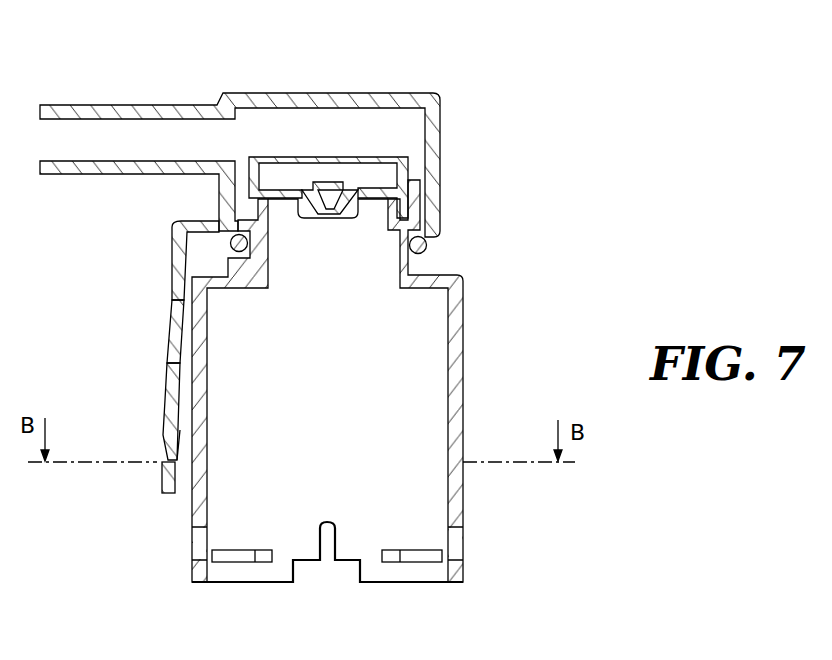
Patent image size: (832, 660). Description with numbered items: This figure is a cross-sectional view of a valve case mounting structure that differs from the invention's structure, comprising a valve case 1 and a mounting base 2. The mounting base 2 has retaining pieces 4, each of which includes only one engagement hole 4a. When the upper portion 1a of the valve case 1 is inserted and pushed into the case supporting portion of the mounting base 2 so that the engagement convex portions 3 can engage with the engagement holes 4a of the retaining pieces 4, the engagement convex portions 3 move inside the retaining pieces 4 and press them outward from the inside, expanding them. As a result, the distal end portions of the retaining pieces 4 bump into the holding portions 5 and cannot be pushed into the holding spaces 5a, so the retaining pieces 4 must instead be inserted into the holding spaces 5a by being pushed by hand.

The valve case 1 is at (458, 362).
The upper portion 1a is at (400, 165).
The mounting base 2 is at (325, 93).
The engagement convex portions 3 is at (170, 367).
The retaining pieces 4 is at (173, 262).
The engagement hole 4a is at (176, 312).
The holding portions 5 is at (163, 483).
The holding spaces 5a is at (185, 452).